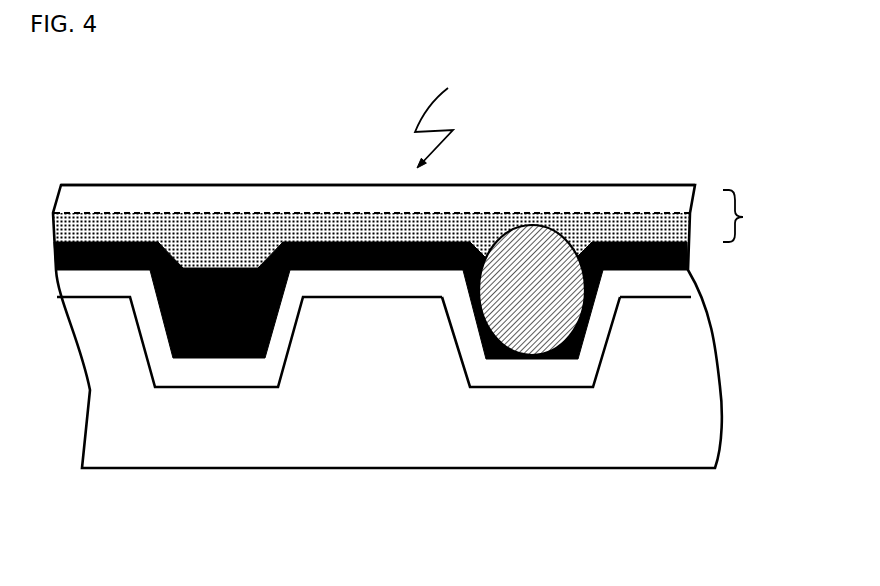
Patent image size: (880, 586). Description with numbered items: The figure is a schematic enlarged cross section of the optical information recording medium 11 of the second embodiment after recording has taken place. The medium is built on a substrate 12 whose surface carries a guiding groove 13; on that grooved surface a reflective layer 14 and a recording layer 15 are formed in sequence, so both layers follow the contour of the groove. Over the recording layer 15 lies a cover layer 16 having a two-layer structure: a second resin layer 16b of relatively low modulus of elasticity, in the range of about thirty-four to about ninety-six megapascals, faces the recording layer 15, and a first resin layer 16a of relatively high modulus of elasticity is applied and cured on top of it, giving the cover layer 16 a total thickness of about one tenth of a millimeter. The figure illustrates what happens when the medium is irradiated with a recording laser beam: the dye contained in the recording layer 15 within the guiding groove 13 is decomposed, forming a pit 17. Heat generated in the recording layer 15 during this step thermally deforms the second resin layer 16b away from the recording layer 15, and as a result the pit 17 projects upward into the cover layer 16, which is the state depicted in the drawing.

The optical information recording medium 11 is at (493, 91).
The substrate 12 is at (673, 397).
The guiding groove 13 is at (535, 388).
The reflective layer 14 is at (698, 289).
The recording layer 15 is at (698, 263).
The cover layer 16 is at (752, 217).
The first resin layer 16a is at (567, 185).
The second resin layer 16b is at (630, 228).
The pit 17 is at (523, 253).